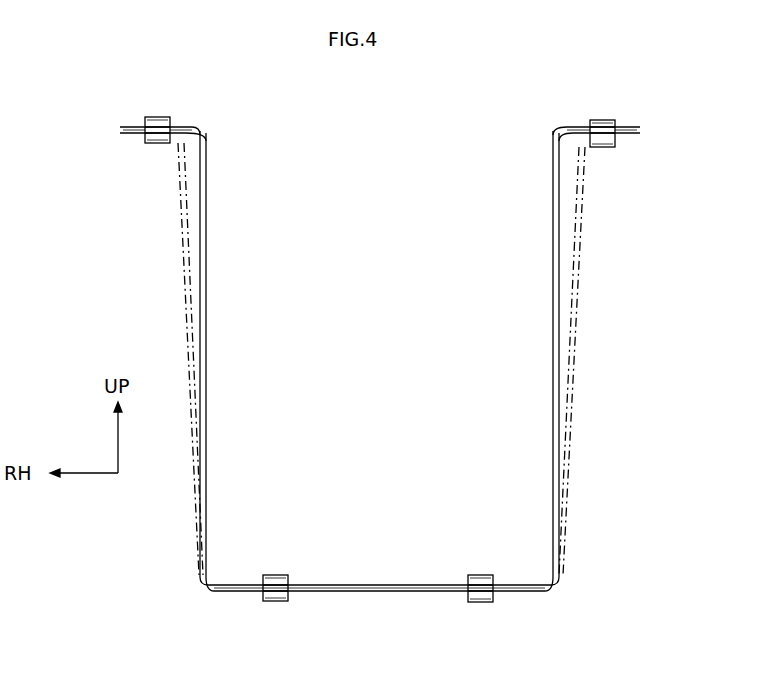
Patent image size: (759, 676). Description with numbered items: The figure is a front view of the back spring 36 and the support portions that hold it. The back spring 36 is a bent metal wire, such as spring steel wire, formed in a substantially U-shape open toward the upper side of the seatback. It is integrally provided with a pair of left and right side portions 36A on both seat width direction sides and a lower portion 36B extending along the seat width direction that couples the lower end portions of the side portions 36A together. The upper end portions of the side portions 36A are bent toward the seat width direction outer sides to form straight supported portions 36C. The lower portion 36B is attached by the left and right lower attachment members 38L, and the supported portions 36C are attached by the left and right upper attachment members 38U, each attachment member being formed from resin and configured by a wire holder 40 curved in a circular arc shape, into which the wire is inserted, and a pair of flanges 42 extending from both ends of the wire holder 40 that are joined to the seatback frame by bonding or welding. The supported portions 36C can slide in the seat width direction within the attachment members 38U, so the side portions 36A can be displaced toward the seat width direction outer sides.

The back spring 36 is at (607, 362).
The side portions 36A is at (203, 283).
The lower portion 36B is at (383, 585).
The supported portions 36C is at (125, 124).
The attachment members 38U is at (158, 117).
The attachment members 38L is at (270, 575).
The wire holder 40 is at (160, 143).
The flanges 42 is at (165, 117).